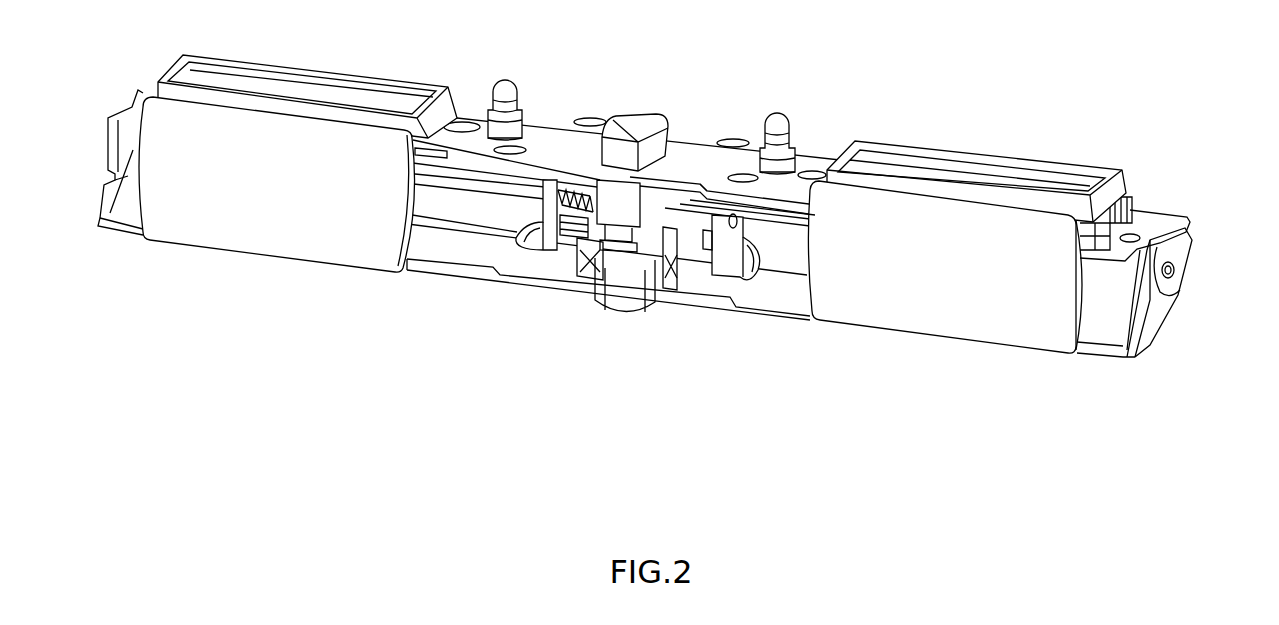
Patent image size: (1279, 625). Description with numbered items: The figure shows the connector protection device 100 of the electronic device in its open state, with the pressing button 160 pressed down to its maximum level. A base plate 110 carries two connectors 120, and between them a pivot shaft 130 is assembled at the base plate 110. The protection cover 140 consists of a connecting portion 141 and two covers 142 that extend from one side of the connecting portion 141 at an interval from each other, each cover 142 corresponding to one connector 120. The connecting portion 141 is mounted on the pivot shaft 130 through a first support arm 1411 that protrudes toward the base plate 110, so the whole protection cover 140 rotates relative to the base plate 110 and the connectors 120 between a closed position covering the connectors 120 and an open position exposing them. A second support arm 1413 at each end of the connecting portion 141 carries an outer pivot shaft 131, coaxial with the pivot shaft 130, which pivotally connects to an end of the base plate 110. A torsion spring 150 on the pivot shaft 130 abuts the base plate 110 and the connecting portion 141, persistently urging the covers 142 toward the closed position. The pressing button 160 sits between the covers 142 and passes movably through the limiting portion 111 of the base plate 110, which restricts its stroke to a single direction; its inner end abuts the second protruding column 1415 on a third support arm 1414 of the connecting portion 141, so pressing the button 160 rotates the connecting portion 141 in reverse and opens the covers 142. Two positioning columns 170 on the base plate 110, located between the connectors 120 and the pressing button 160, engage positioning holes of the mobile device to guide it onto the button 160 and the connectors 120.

The connector protection device 100 is at (70, 297).
The base plate 110 is at (688, 148).
The limiting portion 111 is at (622, 317).
The connectors 120 is at (443, 82).
The pivot shaft 130 is at (713, 213).
The outer pivot shaft 131 is at (1177, 270).
The protection cover 140 is at (680, 213).
The connecting portion 141 is at (457, 247).
The covers 142 is at (343, 232).
The first support arm 1411 is at (537, 245).
The second support arm 1413 is at (1150, 315).
The third support arm 1414 is at (587, 262).
The second protruding column 1415 is at (650, 300).
The torsion spring 150 is at (576, 187).
The pressing button 160 is at (635, 116).
The positioning columns 170 is at (517, 84).